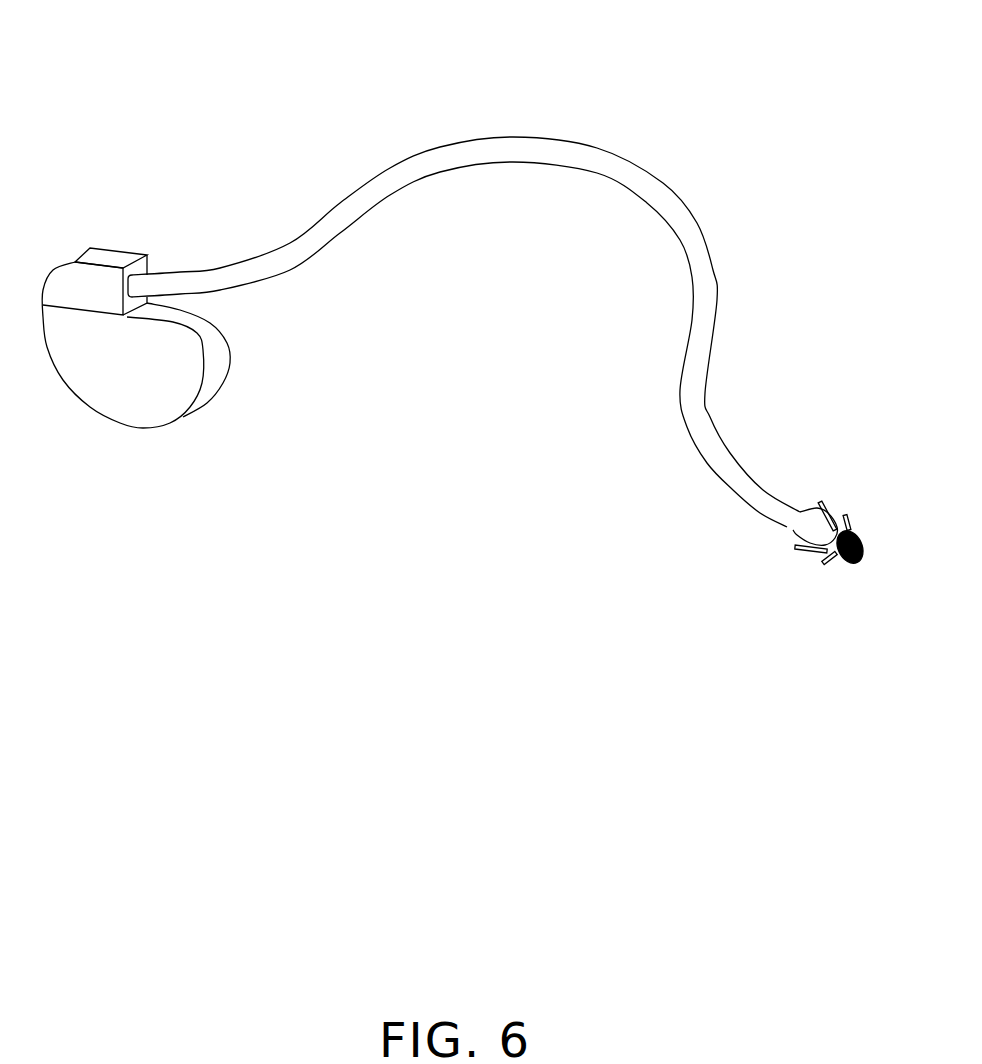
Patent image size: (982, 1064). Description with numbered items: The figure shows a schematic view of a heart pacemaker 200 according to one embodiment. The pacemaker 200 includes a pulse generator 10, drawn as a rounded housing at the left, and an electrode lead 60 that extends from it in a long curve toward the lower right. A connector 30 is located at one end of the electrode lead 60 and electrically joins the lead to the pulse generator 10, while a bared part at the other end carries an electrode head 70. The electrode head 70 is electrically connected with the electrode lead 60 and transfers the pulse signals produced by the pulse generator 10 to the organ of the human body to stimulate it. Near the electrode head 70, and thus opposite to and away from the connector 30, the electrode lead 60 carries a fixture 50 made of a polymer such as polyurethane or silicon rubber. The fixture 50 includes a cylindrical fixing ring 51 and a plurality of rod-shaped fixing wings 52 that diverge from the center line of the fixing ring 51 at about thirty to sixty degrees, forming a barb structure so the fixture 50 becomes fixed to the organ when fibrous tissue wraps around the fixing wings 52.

The pacemaker 200 is at (470, 58).
The pulse generator 10 is at (138, 453).
The connector 30 is at (108, 302).
The electrode lead 60 is at (518, 192).
The fixture 50 is at (758, 589).
The fixing ring 51 is at (793, 527).
The fixing wings 52 is at (803, 577).
The electrode head 70 is at (858, 563).